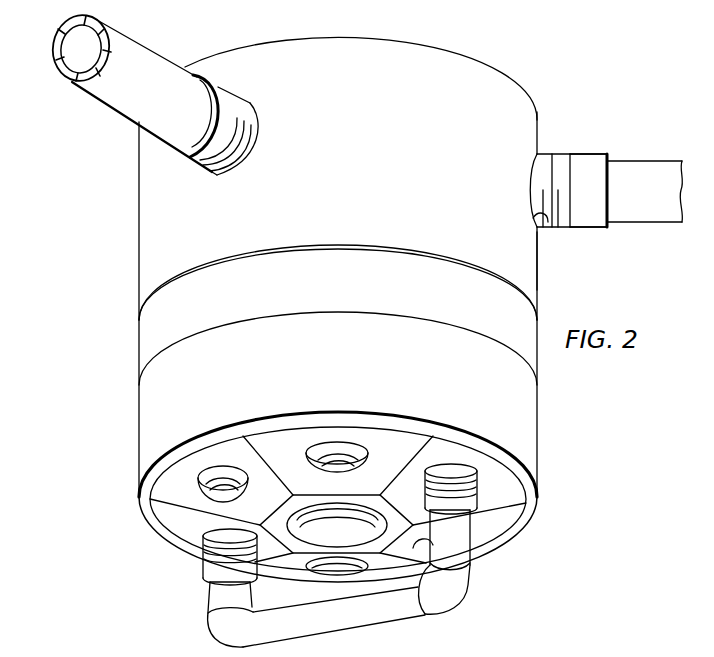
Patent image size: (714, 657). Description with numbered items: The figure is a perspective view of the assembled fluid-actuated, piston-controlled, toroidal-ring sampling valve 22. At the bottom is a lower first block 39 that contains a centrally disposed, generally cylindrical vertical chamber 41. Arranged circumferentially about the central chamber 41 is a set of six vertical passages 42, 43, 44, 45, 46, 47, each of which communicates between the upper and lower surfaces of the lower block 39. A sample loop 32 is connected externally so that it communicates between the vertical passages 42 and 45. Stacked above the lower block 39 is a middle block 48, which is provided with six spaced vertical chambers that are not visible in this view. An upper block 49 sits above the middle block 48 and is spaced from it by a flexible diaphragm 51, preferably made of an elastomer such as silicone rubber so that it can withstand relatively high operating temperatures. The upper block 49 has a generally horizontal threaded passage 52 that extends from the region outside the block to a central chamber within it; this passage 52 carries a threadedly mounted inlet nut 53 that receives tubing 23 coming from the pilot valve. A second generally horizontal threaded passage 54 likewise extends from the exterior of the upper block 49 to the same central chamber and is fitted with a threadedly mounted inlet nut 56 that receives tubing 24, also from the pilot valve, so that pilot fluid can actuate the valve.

The sampling valve 22 is at (544, 88).
The tubing 23 is at (657, 222).
The tubing 24 is at (93, 82).
The sample loop 32 is at (447, 600).
The lower first block 39 is at (536, 457).
The vertical chamber 41 is at (346, 485).
The vertical passage 42 is at (463, 470).
The vertical passage 43 is at (422, 542).
The vertical passage 44 is at (333, 573).
The vertical passage 45 is at (203, 533).
The vertical passage 46 is at (224, 453).
The vertical passage 47 is at (320, 449).
The middle block 48 is at (540, 352).
The upper block 49 is at (540, 258).
The flexible diaphragm 51 is at (522, 288).
The threaded passage 52 is at (552, 222).
The inlet nut 53 is at (591, 220).
The threaded passage 54 is at (258, 127).
The inlet nut 56 is at (216, 92).